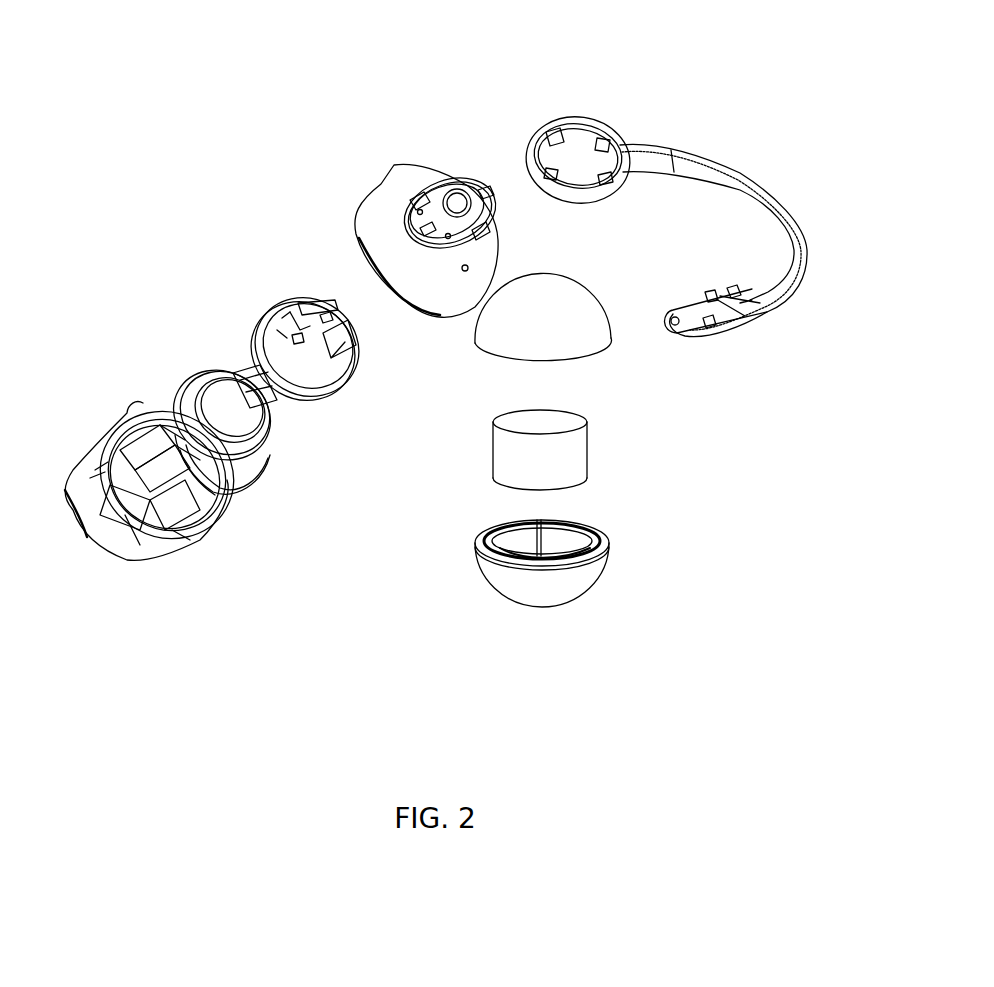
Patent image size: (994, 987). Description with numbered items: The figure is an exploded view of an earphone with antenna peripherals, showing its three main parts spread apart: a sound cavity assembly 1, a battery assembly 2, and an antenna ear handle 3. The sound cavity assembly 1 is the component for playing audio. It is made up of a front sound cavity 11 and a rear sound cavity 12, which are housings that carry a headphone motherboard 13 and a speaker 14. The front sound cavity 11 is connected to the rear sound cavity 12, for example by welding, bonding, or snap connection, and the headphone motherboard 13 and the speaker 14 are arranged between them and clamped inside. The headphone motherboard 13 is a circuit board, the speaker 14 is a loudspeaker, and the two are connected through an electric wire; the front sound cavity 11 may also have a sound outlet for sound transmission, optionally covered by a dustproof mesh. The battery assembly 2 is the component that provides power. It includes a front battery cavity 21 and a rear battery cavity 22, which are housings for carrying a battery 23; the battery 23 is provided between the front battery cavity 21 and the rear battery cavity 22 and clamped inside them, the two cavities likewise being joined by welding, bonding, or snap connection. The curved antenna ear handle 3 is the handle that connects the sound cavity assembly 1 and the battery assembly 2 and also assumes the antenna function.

The sound cavity assembly 1 is at (393, 278).
The front sound cavity 11 is at (97, 512).
The rear sound cavity 12 is at (408, 272).
The headphone motherboard 13 is at (310, 398).
The speaker 14 is at (230, 433).
The battery assembly 2 is at (502, 587).
The front battery cavity 21 is at (545, 332).
The rear battery cavity 22 is at (525, 593).
The battery 23 is at (573, 463).
The antenna ear handle 3 is at (762, 295).